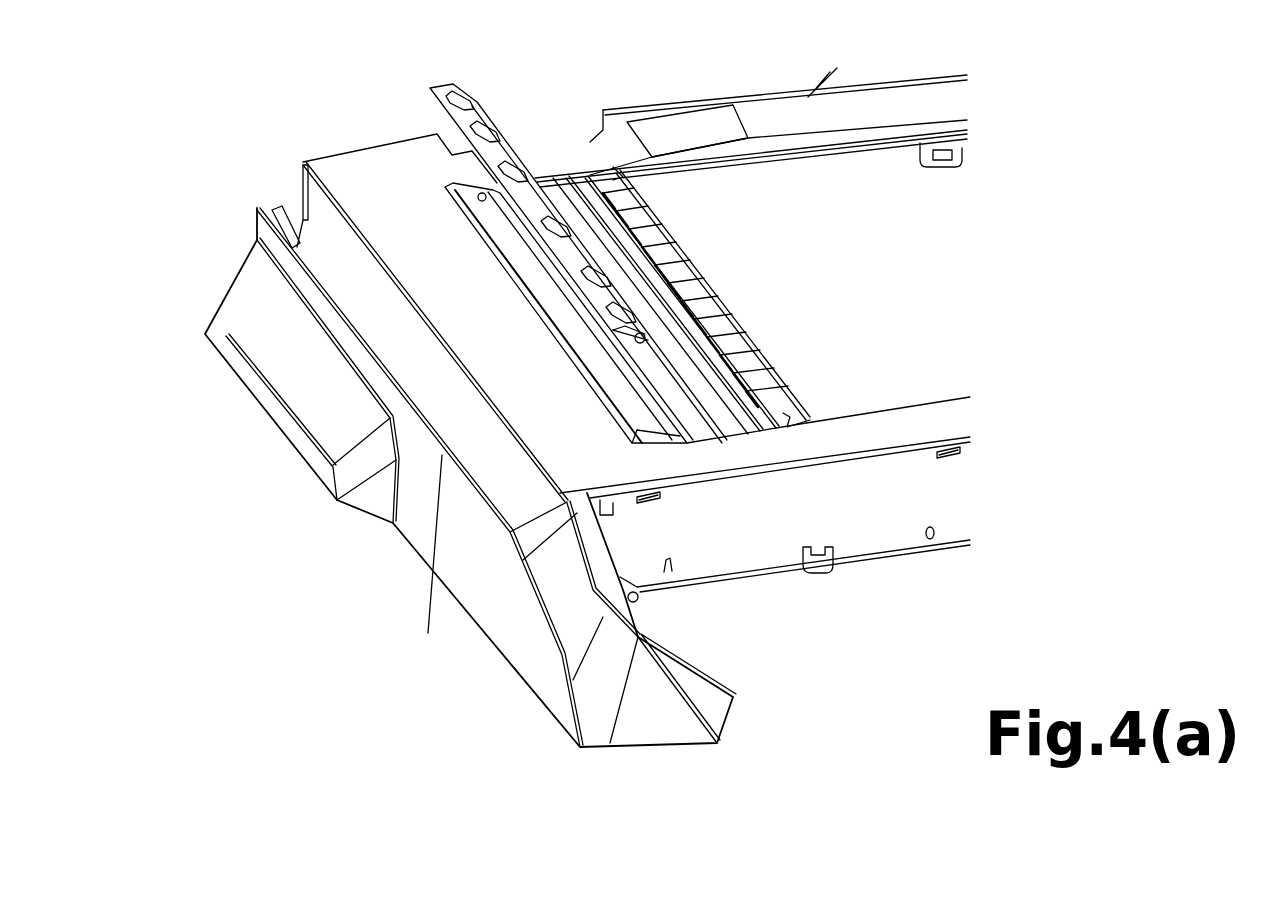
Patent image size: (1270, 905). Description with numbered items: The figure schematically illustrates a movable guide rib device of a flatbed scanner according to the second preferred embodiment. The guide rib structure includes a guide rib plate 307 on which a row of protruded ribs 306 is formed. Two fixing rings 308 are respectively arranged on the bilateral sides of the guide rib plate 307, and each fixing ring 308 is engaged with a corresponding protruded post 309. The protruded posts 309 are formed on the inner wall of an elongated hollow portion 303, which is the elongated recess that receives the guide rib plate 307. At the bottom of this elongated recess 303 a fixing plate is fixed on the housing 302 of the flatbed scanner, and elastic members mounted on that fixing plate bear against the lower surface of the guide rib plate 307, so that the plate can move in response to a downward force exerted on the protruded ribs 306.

The housing 302 is at (873, 437).
The elongated hollow portion 303 is at (565, 322).
The protruded ribs 306 is at (468, 96).
The guide rib plate 307 is at (430, 86).
The fixing rings 308 is at (640, 340).
The protruded posts 309 is at (484, 191).